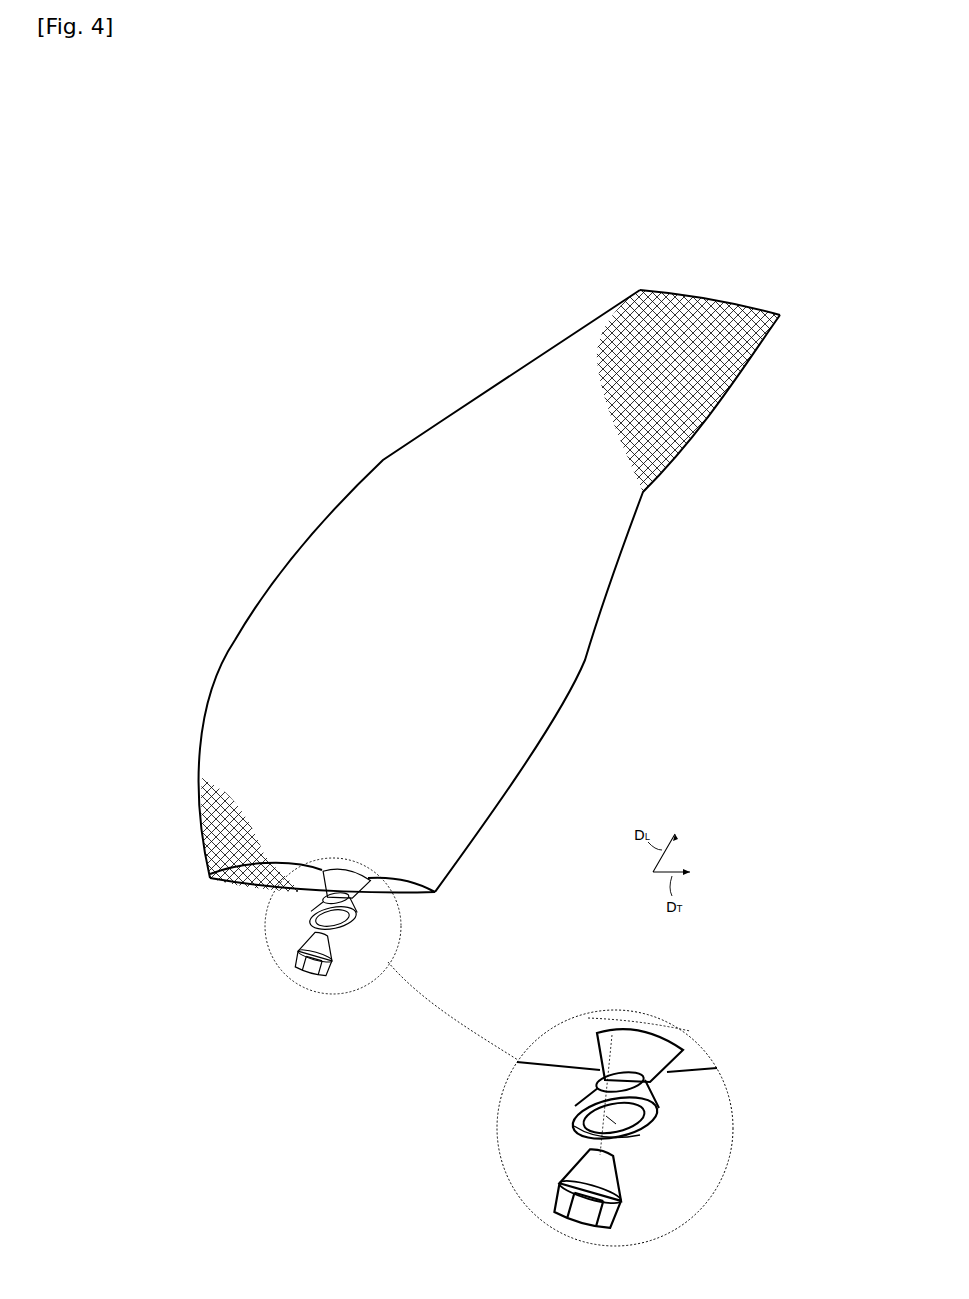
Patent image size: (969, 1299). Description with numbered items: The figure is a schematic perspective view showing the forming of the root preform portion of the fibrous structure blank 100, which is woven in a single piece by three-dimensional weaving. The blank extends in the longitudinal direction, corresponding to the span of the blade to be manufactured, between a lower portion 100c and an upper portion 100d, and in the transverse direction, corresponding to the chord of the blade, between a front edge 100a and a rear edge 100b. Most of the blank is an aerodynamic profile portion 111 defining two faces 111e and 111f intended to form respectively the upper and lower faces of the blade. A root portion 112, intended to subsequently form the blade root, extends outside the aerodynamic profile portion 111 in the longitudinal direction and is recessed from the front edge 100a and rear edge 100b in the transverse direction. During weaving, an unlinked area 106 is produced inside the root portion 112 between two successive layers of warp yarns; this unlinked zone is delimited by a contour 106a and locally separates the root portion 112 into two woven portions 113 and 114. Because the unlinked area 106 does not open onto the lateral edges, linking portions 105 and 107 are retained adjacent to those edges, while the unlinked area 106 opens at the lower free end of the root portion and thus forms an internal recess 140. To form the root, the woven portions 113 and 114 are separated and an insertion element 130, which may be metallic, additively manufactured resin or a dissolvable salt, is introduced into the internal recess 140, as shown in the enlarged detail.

The fibrous structure blank 100 is at (481, 609).
The front edge 100a is at (326, 516).
The rear edge 100b is at (562, 711).
The lower portion 100c is at (290, 928).
The upper portion 100d is at (712, 302).
The aerodynamic profile portion 111 is at (481, 609).
The face of the aerodynamic profile portion 111e is at (307, 640).
The face of the aerodynamic profile portion 111f is at (490, 822).
The root portion 112 is at (564, 1044).
The woven portion 113 is at (600, 1078).
The linking portion 105 is at (575, 1116).
The unlinked area 106 is at (543, 1113).
The contour 106a is at (600, 1083).
The internal recess 140 is at (575, 1140).
The linking portion 107 is at (630, 1140).
The woven portion 114 is at (608, 1118).
The insertion element 130 is at (612, 1170).